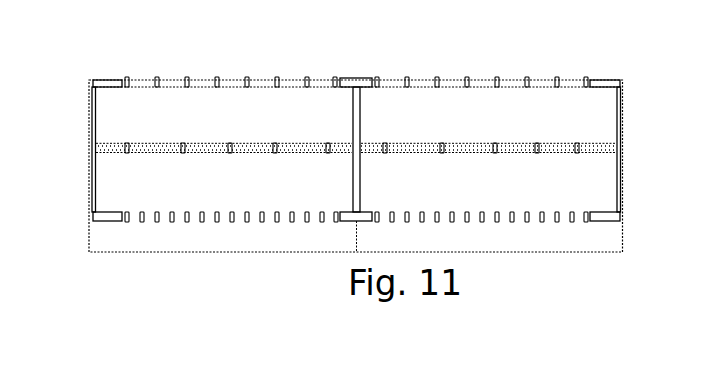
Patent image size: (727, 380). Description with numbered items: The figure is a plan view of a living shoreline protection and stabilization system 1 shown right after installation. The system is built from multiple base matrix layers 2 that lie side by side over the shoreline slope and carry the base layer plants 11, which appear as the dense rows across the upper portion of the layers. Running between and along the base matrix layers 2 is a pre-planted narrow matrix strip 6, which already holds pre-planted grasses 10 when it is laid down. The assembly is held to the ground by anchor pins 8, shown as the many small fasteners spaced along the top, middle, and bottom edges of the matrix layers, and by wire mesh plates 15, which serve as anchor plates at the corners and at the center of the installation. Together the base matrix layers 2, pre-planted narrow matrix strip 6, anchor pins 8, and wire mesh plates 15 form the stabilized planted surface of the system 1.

The living shoreline protection and stabilization system 1 is at (487, 80).
The base matrix layers 2 is at (97, 128).
The pre-planted narrow matrix strip 6 is at (410, 150).
The anchor pin 8 is at (98, 80).
The pre-planted grasses 10 is at (270, 148).
The base layer plants 11 is at (137, 93).
The wire mesh plate 15 is at (103, 80).